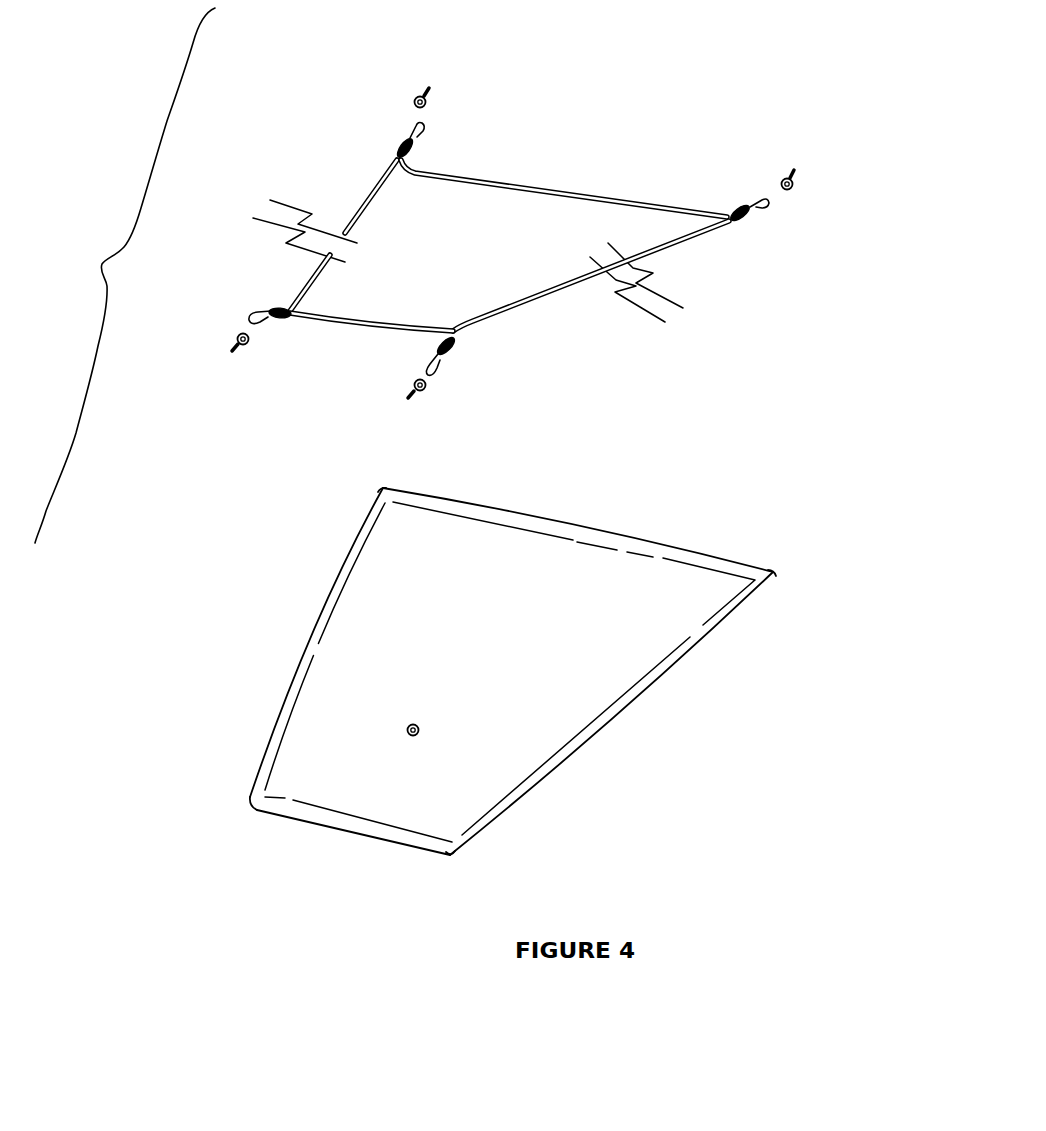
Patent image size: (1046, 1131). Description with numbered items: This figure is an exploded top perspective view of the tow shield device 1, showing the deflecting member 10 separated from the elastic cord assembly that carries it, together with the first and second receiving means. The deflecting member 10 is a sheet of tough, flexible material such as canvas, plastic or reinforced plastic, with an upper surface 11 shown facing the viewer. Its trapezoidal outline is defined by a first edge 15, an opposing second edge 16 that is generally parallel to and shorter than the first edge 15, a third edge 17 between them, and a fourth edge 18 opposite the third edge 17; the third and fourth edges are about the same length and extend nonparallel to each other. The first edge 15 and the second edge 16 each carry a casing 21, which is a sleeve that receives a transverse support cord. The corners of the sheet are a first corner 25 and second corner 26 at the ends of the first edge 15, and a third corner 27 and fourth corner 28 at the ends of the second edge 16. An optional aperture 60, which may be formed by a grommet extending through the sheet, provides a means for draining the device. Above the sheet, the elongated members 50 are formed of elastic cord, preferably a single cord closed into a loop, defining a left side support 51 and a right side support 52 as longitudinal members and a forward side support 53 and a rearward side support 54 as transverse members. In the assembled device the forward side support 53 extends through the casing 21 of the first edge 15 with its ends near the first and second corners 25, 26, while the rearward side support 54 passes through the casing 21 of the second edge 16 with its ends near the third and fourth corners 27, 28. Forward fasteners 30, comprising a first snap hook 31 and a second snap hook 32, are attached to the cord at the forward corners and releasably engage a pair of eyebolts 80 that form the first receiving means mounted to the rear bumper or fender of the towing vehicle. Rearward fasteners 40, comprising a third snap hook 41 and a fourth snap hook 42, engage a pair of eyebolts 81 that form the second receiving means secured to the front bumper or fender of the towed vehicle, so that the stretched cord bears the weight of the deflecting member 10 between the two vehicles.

The tow shield device 1 is at (125, 275).
The deflecting member 10 is at (753, 653).
The upper surface 11 is at (526, 722).
The first edge 15 is at (673, 552).
The second edge 16 is at (330, 822).
The third edge 17 is at (633, 693).
The fourth edge 18 is at (297, 674).
The casing 21 is at (497, 520).
The first corner 25 is at (372, 498).
The second corner 26 is at (778, 575).
The third corner 27 is at (452, 850).
The fourth corner 28 is at (250, 805).
The forward fasteners 30 is at (763, 197).
The first snap hook 31 is at (412, 123).
The second snap hook 32 is at (770, 202).
The rearward fasteners 40 is at (502, 237).
The third snap hook 41 is at (440, 363).
The fourth snap hook 42 is at (247, 314).
The elongated members 50 is at (313, 308).
The left side support 51 is at (357, 210).
The right side support 52 is at (680, 243).
The forward side support 53 is at (563, 195).
The rearward side support 54 is at (367, 317).
The aperture 60 is at (418, 723).
The eyebolts 80 is at (427, 90).
The eyebolts 81 is at (249, 341).